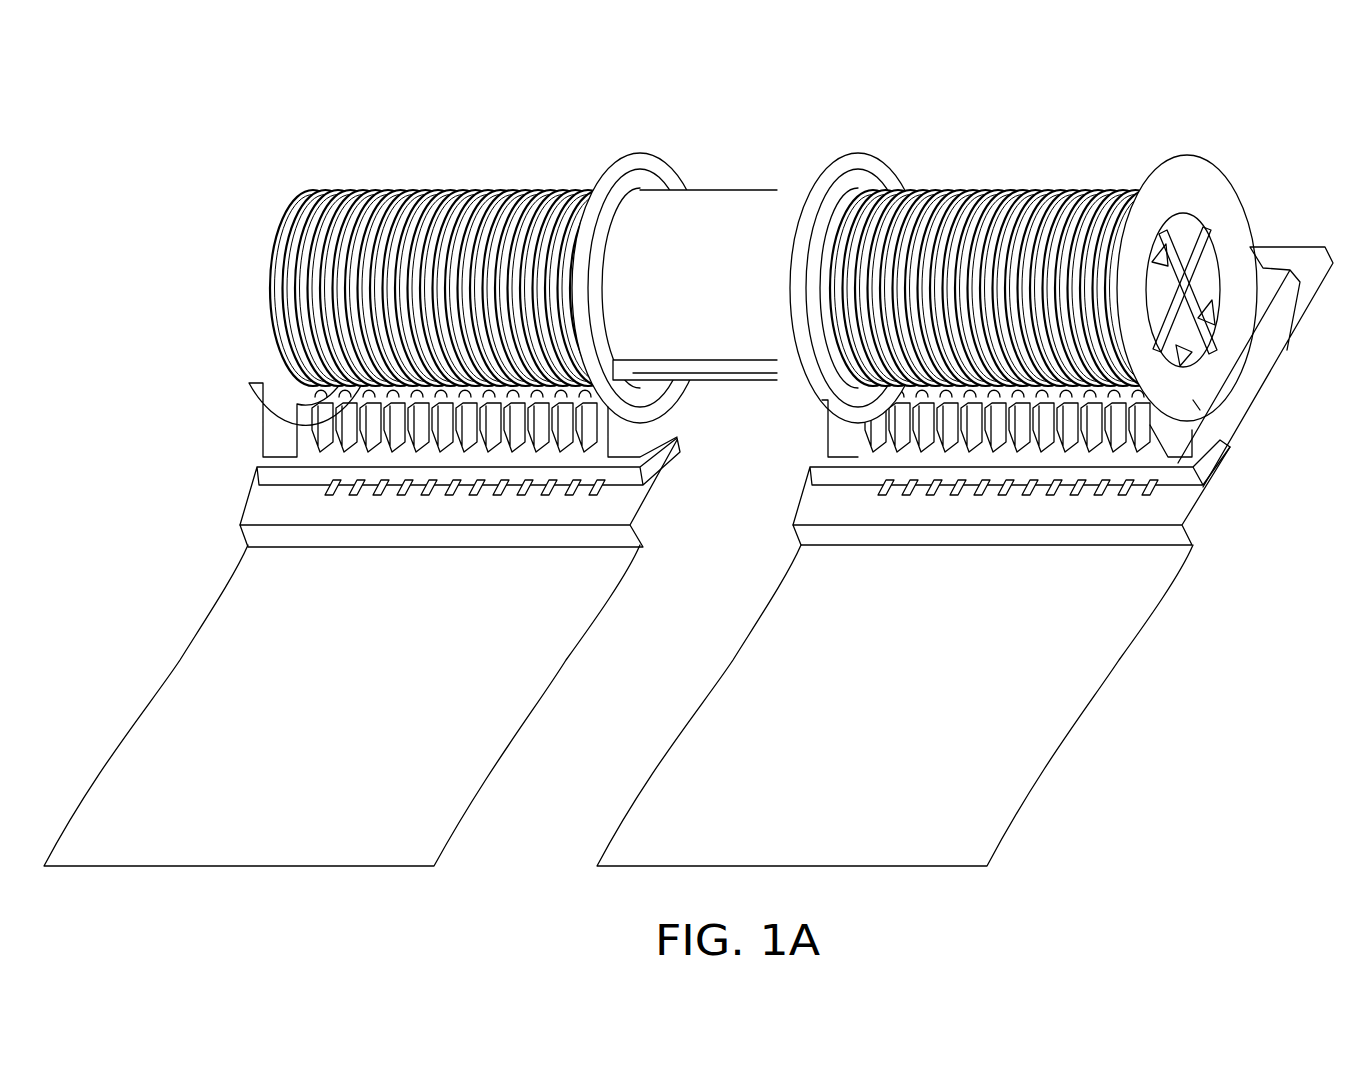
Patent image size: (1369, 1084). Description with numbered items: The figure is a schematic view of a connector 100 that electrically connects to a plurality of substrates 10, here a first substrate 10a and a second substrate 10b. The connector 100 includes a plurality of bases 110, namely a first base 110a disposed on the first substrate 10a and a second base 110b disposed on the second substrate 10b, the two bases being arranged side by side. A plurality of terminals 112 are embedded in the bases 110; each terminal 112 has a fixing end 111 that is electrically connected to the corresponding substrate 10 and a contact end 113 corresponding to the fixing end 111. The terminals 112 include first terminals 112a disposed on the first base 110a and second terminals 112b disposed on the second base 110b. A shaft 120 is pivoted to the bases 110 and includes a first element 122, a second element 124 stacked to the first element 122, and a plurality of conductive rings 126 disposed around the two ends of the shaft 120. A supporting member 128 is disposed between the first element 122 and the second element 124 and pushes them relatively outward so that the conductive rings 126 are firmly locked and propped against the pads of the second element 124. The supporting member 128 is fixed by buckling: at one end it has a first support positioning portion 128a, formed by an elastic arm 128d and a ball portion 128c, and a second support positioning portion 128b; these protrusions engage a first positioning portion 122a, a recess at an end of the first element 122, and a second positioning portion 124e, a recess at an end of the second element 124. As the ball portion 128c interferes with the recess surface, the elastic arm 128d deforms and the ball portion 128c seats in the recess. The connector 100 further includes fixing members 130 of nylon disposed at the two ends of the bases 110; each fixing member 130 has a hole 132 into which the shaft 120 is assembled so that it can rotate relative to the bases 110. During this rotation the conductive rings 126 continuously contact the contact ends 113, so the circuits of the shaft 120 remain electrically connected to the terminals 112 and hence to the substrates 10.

The connector 100 is at (138, 157).
The substrates 10 is at (637, 653).
The first substrate 10a is at (797, 517).
The second substrate 10b is at (617, 510).
The bases 110 is at (752, 492).
The first base 110a is at (1045, 492).
The second base 110b is at (441, 457).
The terminals 112 is at (1073, 482).
The fixing end 111 is at (1107, 452).
The contact end 113 is at (1127, 490).
The first terminals 112a is at (1045, 415).
The second terminals 112b is at (318, 396).
The shaft 120 is at (720, 260).
The first element 122 is at (648, 372).
The second element 124 is at (760, 200).
The conductive rings 126 is at (990, 282).
The supporting member 128 is at (718, 372).
The first support positioning portion 128a is at (1166, 208).
The second support positioning portion 128b is at (1213, 340).
The ball portion 128c is at (1156, 255).
The elastic arm 128d is at (1158, 258).
The fixing members 130 is at (1236, 275).
The hole 132 is at (1193, 233).
The first positioning portion 122a is at (1205, 348).
The second positioning portion 124e is at (1205, 275).